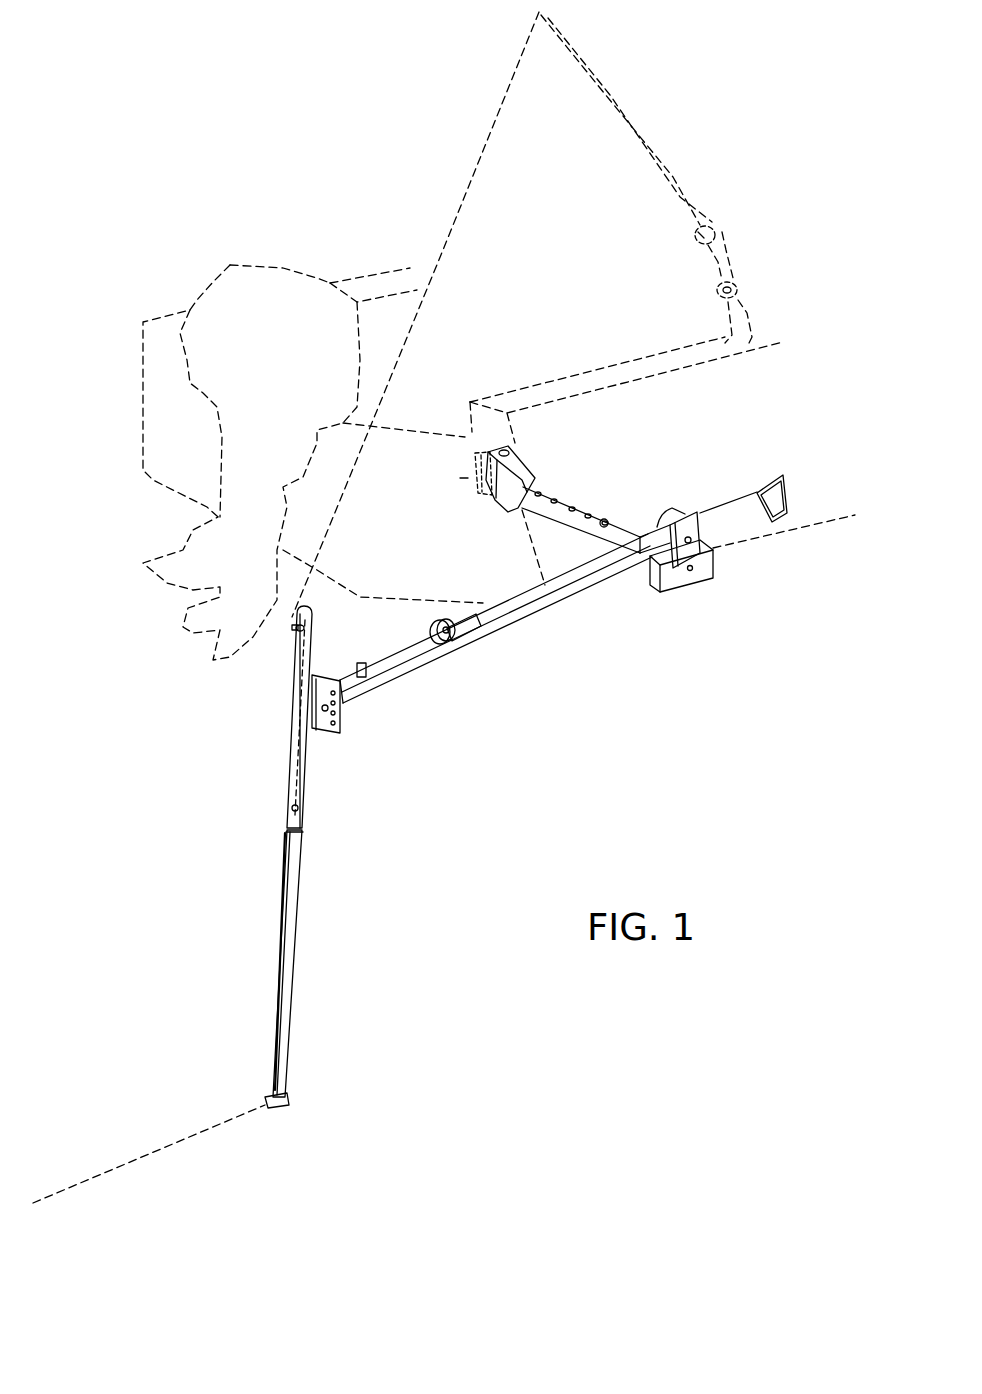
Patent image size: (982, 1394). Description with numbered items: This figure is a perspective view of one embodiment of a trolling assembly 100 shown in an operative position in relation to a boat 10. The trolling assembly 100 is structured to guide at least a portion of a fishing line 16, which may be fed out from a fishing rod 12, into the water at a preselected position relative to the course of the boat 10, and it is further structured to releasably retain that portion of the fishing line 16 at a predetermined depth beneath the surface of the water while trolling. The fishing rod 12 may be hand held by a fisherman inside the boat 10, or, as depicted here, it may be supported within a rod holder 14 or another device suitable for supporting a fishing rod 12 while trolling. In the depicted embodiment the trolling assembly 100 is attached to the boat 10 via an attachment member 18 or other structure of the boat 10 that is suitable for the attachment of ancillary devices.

The boat 10 is at (667, 446).
The fishing rod 12 is at (720, 260).
The rod holder 14 is at (745, 302).
The fishing line 16 is at (488, 136).
The attachment member 18 is at (463, 477).
The trolling assembly 100 is at (551, 667).